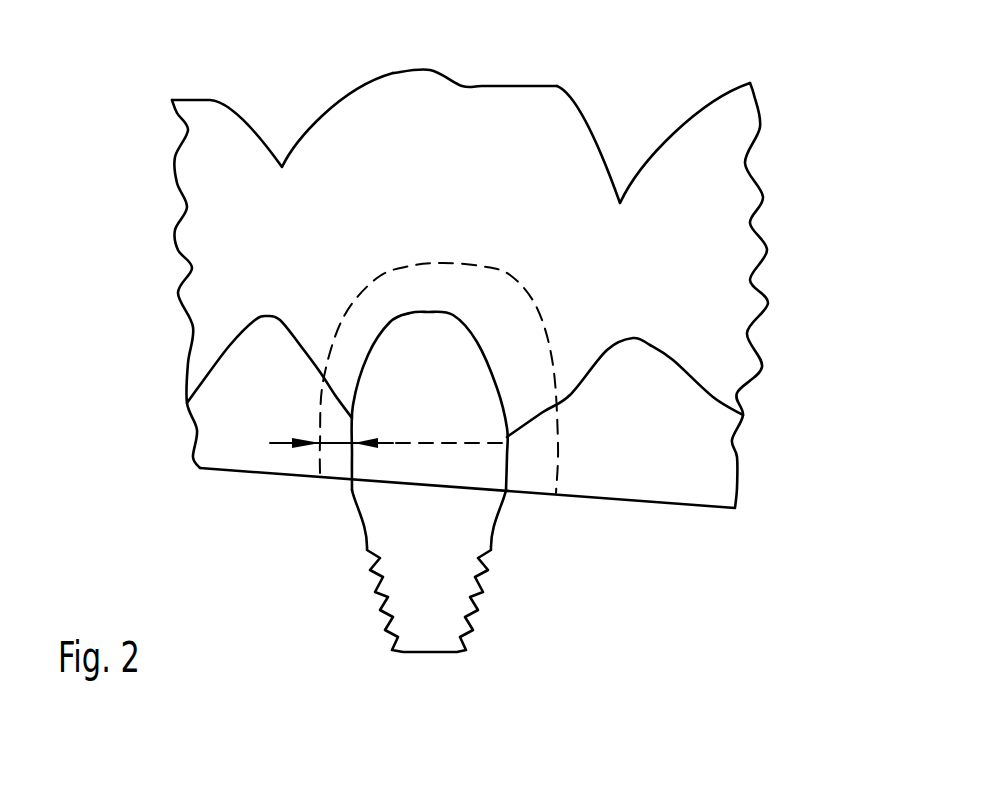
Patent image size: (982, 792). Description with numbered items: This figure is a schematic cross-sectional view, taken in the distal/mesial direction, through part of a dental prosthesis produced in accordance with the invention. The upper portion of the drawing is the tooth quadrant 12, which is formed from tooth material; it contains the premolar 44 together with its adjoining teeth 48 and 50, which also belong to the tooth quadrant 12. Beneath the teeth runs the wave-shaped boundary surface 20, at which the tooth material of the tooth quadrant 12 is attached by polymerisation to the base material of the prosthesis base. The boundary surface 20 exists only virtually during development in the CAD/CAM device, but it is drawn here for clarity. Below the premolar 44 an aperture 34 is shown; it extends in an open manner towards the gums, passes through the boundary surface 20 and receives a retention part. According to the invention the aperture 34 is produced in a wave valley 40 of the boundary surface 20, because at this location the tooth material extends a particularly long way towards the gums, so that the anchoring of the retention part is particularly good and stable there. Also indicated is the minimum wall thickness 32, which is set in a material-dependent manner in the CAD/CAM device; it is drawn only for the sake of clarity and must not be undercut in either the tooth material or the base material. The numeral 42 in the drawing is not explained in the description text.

The tooth quadrant 12 is at (396, 198).
The boundary surface 20 is at (532, 406).
The minimum wall thickness 32 is at (337, 450).
The aperture 34 is at (458, 418).
The wave valley 40 is at (427, 442).
The gingiva 42 is at (648, 327).
The premolar 44 is at (490, 113).
The adjoining tooth 48 is at (210, 123).
The adjoining tooth 50 is at (727, 115).